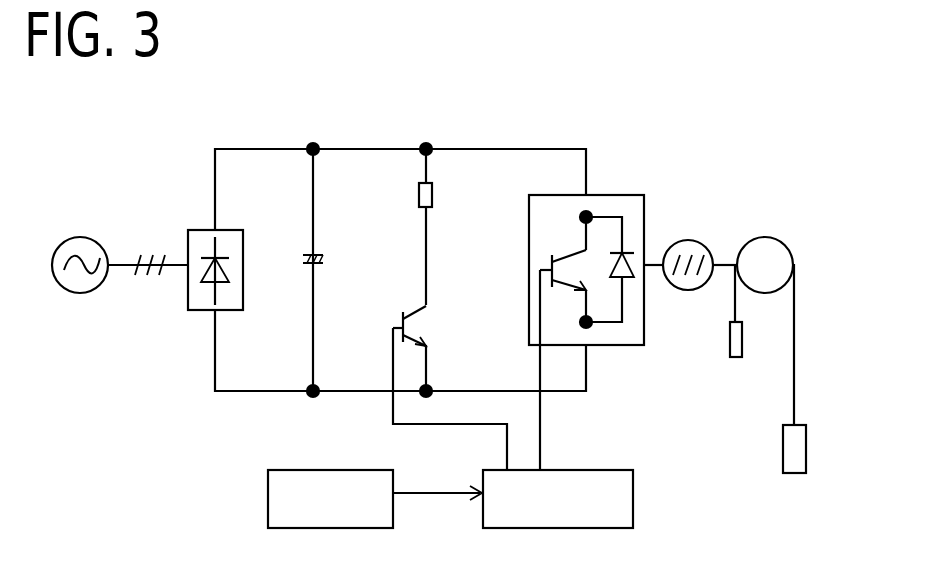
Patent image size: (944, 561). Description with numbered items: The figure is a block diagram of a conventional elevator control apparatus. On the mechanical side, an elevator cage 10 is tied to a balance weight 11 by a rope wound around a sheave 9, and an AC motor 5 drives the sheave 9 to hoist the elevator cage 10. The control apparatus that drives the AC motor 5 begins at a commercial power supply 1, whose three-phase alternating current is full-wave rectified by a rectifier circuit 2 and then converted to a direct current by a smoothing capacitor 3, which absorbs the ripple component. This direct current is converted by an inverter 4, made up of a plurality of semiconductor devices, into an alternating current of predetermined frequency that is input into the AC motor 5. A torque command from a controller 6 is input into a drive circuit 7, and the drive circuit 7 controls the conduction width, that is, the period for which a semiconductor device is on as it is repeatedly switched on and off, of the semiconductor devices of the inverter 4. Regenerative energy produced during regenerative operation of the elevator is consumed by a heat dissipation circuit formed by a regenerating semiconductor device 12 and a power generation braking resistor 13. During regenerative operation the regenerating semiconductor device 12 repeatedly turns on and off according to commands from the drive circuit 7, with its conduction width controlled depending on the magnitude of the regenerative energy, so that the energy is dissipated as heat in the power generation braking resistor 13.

The commercial power supply 1 is at (82, 238).
The rectifier circuit 2 is at (226, 230).
The smoothing capacitor 3 is at (317, 254).
The inverter 4 is at (608, 195).
The AC motor 5 is at (688, 240).
The controller 6 is at (318, 470).
The drive circuit 7 is at (587, 470).
The sheave 9 is at (765, 237).
The elevator cage 10 is at (806, 450).
The balance weight 11 is at (737, 357).
The regenerating semiconductor device 12 is at (424, 318).
The power generation braking resistor 13 is at (432, 194).